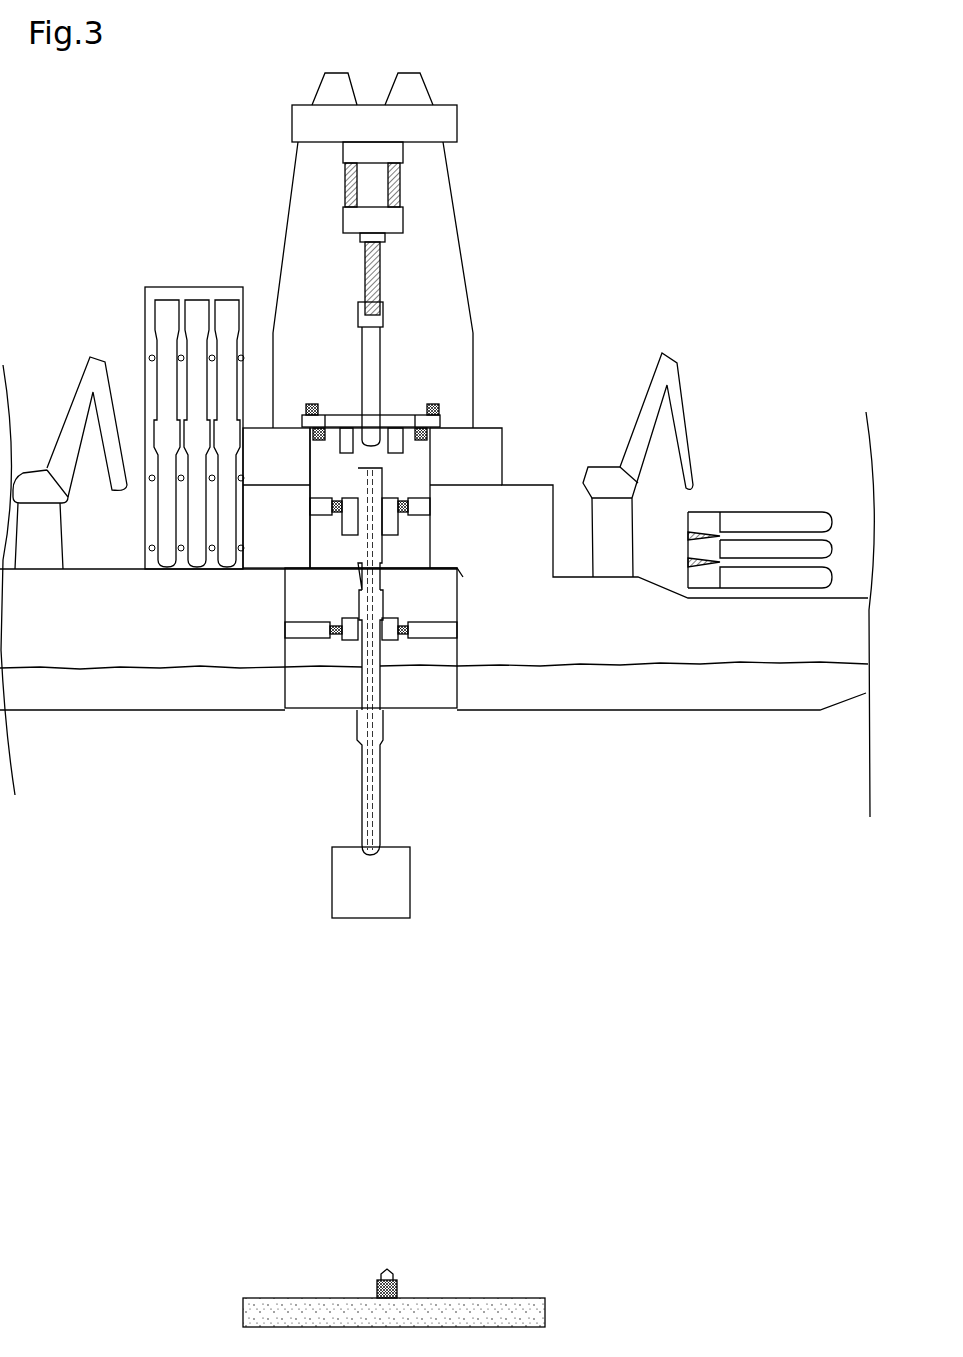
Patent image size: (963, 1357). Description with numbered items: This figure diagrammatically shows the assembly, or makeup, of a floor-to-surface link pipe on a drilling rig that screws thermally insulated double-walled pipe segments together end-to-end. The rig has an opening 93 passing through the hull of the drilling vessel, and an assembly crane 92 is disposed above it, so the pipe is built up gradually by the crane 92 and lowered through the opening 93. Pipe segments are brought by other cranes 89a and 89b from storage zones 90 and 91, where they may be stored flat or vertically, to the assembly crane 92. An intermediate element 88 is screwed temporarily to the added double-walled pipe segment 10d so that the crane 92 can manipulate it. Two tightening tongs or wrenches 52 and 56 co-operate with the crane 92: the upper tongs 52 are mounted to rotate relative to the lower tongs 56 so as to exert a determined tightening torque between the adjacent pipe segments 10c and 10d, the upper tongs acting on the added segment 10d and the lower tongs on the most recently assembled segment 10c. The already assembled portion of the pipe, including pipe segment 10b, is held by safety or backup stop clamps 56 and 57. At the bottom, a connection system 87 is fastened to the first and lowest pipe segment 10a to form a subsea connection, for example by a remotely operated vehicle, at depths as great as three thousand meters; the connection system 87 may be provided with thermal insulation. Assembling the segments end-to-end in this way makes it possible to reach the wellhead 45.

The crane 92 is at (400, 153).
The intermediate element 88 is at (377, 291).
The double-walled pipe segment 10d is at (372, 366).
The upper tongs 52 is at (303, 415).
The lower tongs 56 is at (320, 515).
The pipe segment 10c is at (380, 562).
The opening 93 is at (283, 601).
The safety or backup stop clamp 57 is at (436, 620).
The pipe segment 10b is at (380, 695).
The first pipe segment 10a is at (375, 808).
The connection system 87 is at (398, 886).
The storage zone 90 is at (152, 290).
The crane 89b is at (83, 382).
The crane 89a is at (682, 407).
The storage zone 91 is at (774, 507).
The wellhead 45 is at (417, 1265).